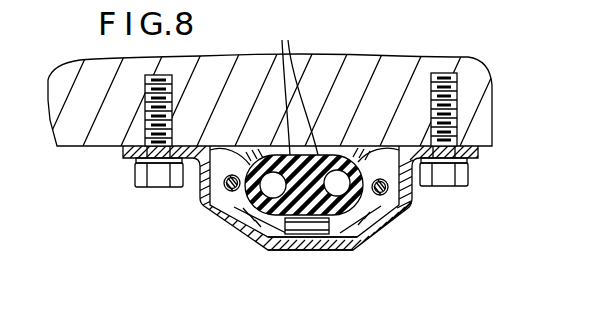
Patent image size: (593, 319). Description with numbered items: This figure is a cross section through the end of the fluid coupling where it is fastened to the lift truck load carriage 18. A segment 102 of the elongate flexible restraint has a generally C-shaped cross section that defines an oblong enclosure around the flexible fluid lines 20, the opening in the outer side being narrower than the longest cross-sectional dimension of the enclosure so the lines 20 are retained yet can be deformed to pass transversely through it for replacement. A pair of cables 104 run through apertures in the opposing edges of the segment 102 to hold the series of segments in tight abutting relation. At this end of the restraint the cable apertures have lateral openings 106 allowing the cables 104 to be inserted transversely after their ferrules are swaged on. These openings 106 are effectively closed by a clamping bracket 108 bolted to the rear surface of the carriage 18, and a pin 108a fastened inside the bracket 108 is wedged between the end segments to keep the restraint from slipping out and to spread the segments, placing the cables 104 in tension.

The lift truck load carriage 18 is at (322, 54).
The flexible fluid lines 20 is at (303, 121).
The segment 102 is at (238, 205).
The cable 104 is at (218, 185).
The lateral opening 106 is at (224, 184).
The clamping bracket 108 is at (308, 254).
The pin 108a is at (320, 232).